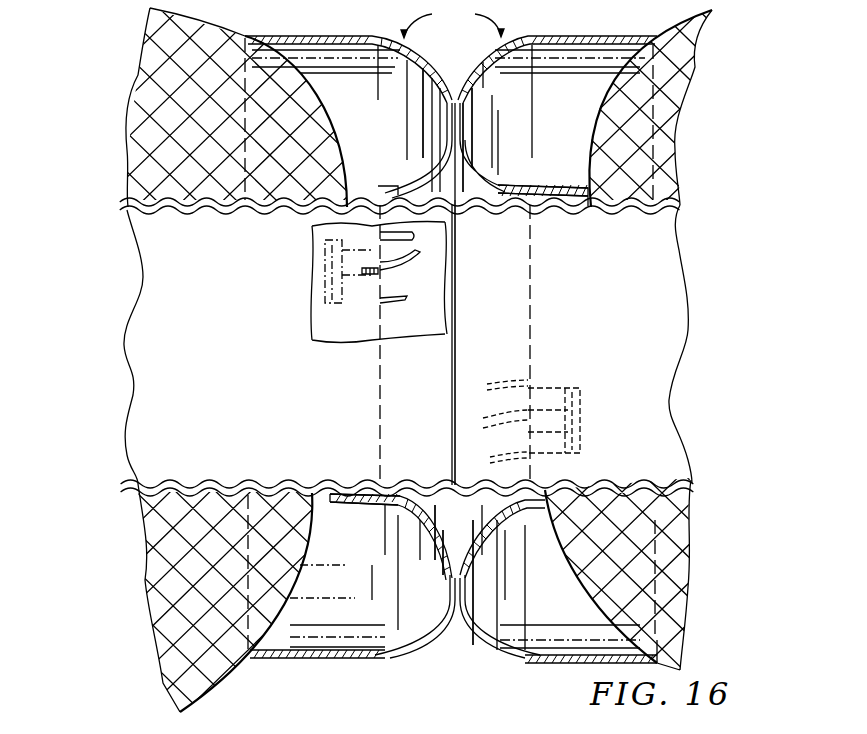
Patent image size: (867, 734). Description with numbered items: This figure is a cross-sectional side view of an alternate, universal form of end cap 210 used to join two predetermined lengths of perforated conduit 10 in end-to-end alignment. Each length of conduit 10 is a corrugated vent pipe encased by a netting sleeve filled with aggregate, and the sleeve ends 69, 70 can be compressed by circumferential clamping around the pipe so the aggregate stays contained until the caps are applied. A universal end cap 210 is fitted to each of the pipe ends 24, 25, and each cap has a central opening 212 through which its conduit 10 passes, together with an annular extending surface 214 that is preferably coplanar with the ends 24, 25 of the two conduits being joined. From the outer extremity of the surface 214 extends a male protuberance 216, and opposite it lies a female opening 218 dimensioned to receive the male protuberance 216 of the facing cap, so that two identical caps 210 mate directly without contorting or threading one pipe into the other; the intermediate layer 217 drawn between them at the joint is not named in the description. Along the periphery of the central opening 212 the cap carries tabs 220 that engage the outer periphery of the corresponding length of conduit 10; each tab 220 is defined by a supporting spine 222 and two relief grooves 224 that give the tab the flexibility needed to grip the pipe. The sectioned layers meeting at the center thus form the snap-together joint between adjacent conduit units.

The conduit 10 is at (270, 381).
The pipe end 24 is at (457, 368).
The pipe end 25 is at (447, 292).
The sleeve end 69 is at (318, 92).
The sleeve end 70 is at (600, 110).
The universal end cap 210 is at (452, 21).
The central opening 212 is at (388, 188).
The annular extending surface 214 is at (450, 98).
The male protuberance 216 is at (437, 98).
The intermediate layer 217 is at (466, 130).
The female opening 218 is at (468, 108).
The tab 220 is at (313, 282).
The supporting spine 222 is at (512, 185).
The relief groove 224 is at (450, 228).